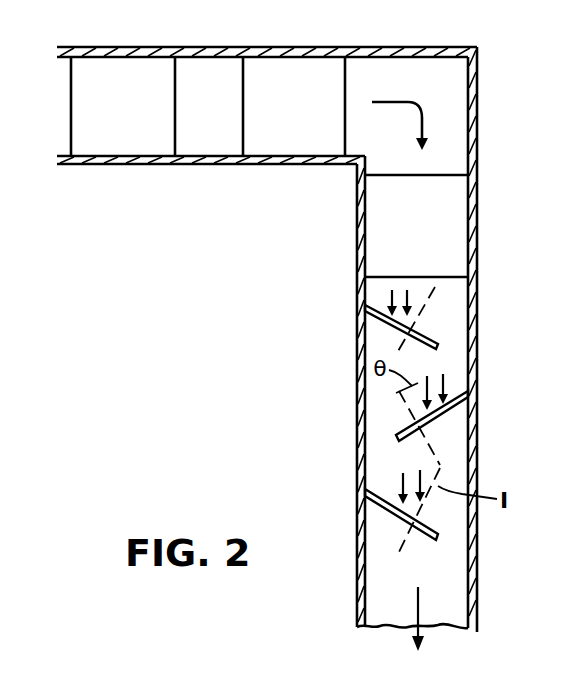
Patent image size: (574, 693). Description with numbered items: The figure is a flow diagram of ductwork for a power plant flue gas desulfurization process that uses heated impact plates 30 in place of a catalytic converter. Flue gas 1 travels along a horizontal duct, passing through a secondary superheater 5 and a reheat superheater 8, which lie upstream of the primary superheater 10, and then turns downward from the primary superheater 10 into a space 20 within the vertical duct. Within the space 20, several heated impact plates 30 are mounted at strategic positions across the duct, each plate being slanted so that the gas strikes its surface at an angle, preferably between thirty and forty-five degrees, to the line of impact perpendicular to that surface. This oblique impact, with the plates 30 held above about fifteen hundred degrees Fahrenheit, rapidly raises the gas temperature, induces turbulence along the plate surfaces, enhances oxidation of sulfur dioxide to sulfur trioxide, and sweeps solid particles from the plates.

The flue gas 1 is at (402, 108).
The secondary superheater 5 is at (106, 125).
The reheat superheater 8 is at (280, 125).
The primary superheater 10 is at (423, 238).
The space 20 is at (378, 413).
The heated impact plates 30 is at (376, 320).